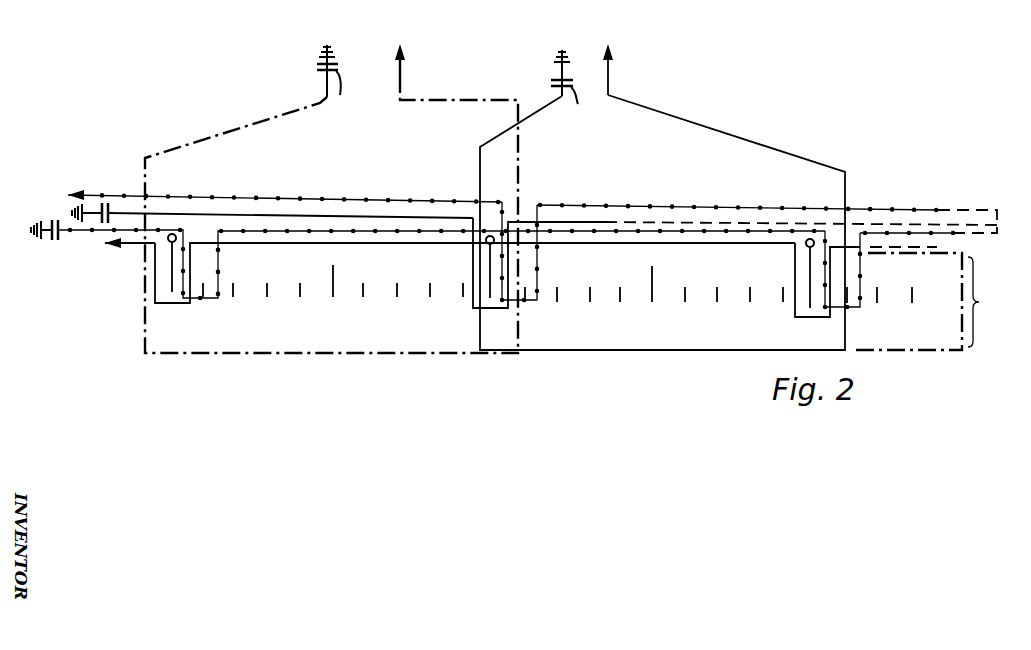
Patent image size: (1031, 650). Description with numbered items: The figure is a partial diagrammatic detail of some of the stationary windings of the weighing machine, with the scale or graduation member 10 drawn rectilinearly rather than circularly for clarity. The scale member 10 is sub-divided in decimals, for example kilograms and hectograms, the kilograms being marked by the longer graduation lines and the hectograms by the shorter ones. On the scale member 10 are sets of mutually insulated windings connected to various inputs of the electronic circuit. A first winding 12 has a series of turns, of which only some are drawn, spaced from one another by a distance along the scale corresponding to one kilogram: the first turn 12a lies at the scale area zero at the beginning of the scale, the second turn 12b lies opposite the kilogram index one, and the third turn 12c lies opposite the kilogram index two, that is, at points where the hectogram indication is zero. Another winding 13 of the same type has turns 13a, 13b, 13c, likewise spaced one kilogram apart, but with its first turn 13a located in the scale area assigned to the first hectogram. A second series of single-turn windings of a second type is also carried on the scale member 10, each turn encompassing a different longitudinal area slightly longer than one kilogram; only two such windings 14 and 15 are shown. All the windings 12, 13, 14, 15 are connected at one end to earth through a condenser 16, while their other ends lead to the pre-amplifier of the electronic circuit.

The scale or graduation member 10 is at (1005, 312).
The first winding 12 is at (137, 250).
The first turn of the first winding 12a is at (188, 303).
The second turn of the first winding 12b is at (474, 310).
The third turn of the first winding 12c is at (793, 313).
The second winding 13 is at (965, 207).
The first turn of the second winding 13a is at (222, 251).
The second turn of the second winding 13b is at (542, 251).
The third turn of the second winding 13c is at (861, 312).
The winding of the second type 14 is at (254, 360).
The winding of the second type 15 is at (641, 358).
The condenser 16 is at (120, 200).